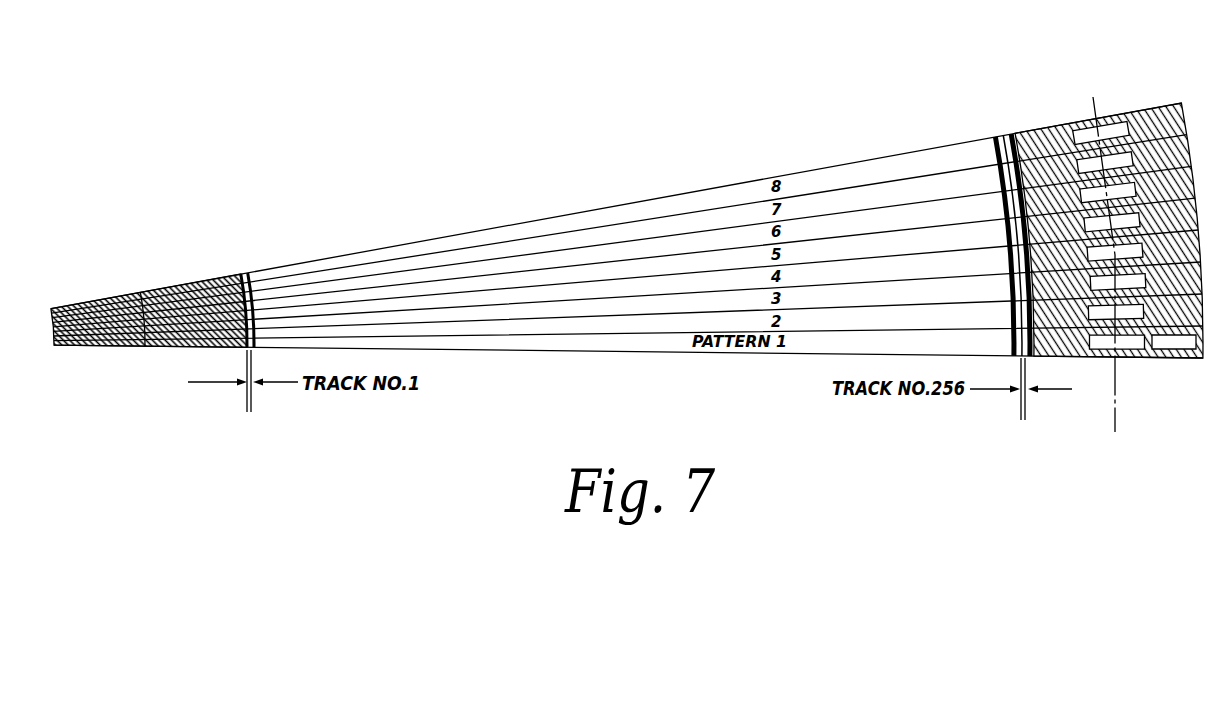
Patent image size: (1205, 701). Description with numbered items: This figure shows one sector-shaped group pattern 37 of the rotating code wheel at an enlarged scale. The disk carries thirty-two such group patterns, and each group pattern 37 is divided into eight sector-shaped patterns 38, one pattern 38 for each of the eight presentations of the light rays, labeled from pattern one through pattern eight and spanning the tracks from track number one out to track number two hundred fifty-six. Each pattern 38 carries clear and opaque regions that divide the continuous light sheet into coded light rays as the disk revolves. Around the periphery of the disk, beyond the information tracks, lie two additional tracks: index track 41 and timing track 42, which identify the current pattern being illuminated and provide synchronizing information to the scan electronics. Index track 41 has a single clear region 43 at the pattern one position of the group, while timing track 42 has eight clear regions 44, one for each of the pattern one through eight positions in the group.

The group pattern 37 is at (476, 231).
The sector-shaped pattern 38 is at (589, 339).
The index track 41 is at (1160, 112).
The timing track 42 is at (1078, 118).
The clear region 43 is at (1176, 348).
The clear regions 44 is at (1084, 135).